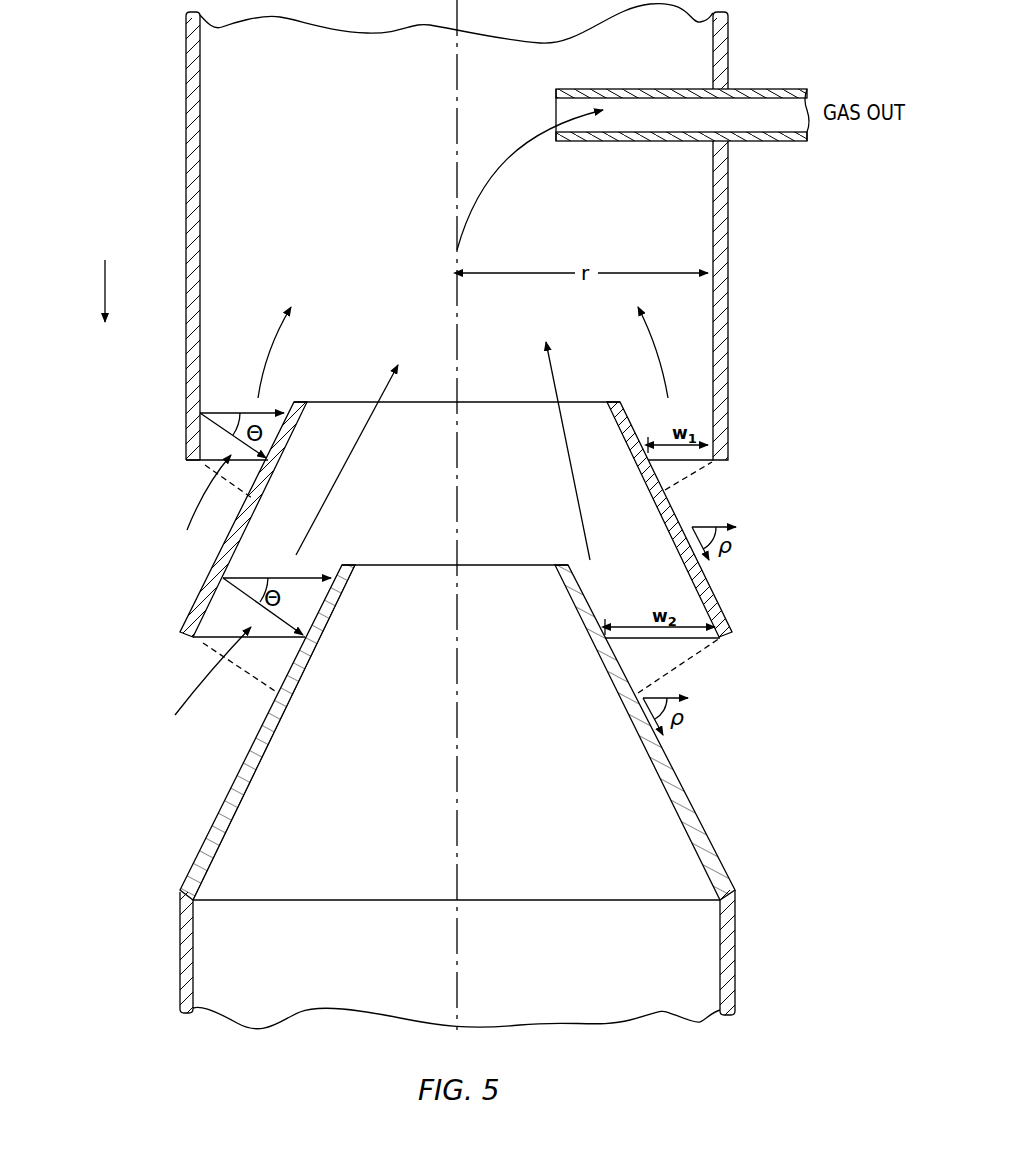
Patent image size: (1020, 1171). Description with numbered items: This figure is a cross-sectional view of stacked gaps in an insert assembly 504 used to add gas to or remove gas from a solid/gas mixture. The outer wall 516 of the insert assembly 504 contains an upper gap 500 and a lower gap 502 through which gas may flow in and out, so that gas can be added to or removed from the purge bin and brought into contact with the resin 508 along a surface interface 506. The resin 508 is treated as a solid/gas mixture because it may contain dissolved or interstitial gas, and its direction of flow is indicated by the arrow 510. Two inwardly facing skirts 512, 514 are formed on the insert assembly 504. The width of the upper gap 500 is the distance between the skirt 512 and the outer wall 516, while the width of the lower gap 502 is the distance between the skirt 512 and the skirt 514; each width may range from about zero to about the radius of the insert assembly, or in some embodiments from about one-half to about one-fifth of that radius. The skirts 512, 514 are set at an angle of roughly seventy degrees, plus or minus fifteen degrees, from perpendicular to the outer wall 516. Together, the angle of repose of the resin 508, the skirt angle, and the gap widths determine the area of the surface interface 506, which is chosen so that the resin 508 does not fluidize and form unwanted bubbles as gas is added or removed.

The upper gap 500 is at (202, 492).
The lower gap 502 is at (197, 672).
The insert assembly 504 is at (186, 55).
The surface interface 506 is at (208, 468).
The resin 508 is at (158, 194).
The arrow 510 is at (105, 275).
The skirt 512 is at (302, 428).
The skirt 514 is at (305, 675).
The outer wall 516 is at (728, 243).